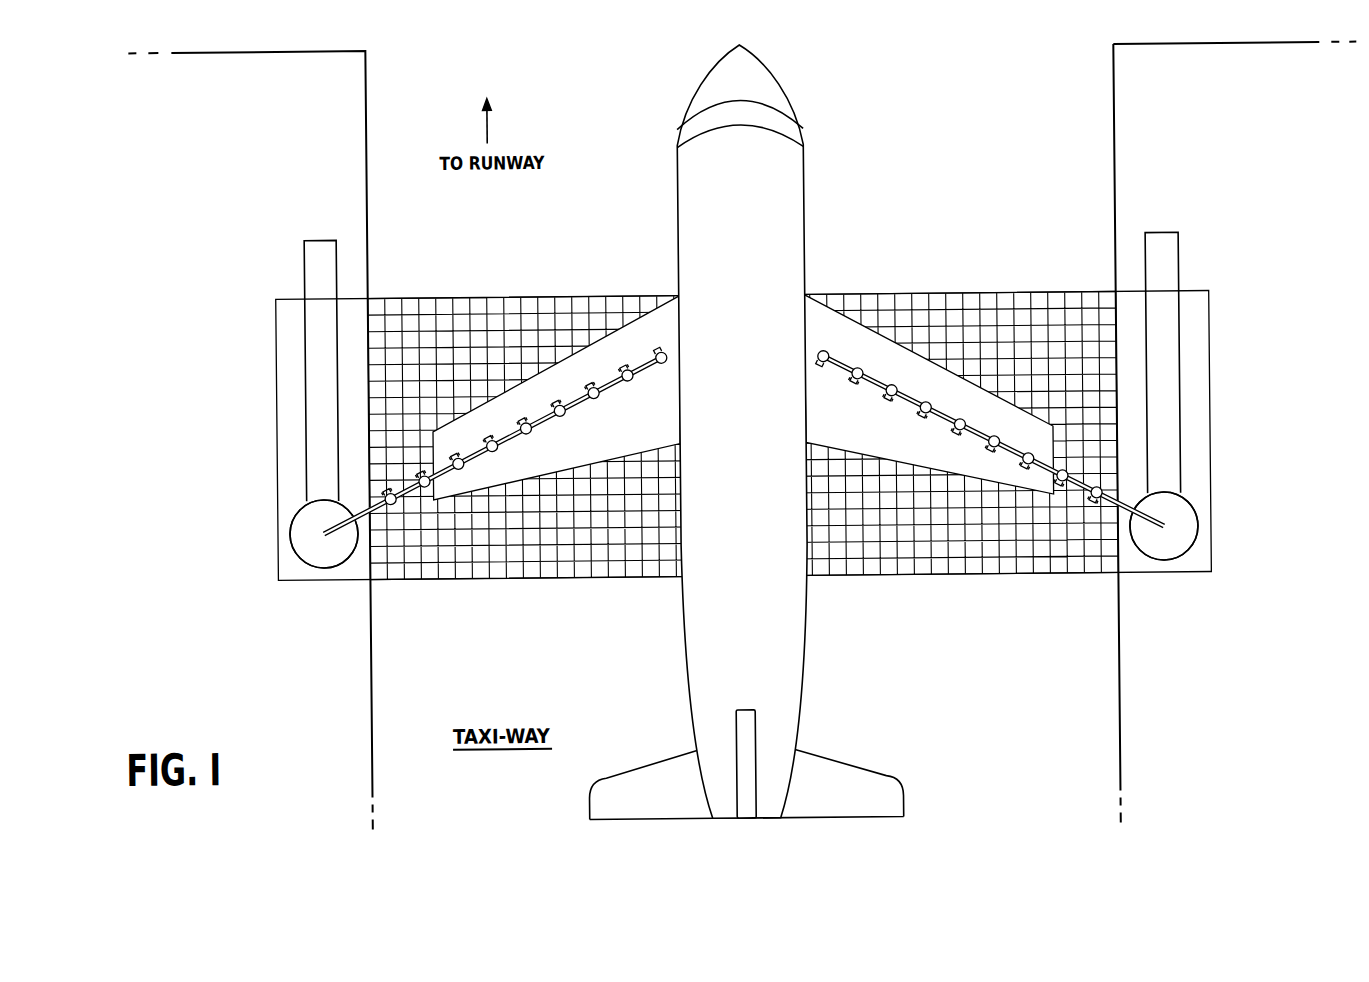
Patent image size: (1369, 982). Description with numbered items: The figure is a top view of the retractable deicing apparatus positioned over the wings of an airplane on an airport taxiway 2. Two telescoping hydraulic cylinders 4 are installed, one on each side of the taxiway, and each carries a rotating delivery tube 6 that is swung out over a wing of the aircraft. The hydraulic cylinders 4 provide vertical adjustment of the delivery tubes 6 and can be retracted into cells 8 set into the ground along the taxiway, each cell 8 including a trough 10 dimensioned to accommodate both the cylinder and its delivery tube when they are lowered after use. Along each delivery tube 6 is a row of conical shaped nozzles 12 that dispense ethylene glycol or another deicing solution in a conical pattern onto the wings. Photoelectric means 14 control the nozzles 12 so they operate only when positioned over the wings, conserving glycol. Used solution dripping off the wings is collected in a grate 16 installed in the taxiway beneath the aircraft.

The taxiway 2 is at (398, 113).
The telescoping hydraulic cylinder 4 is at (305, 542).
The rotating delivery tube 6 is at (604, 388).
The cell 8 is at (292, 510).
The trough 10 is at (320, 268).
The conical shaped nozzle 12 is at (560, 414).
The photoelectric means 14 is at (660, 350).
The grate 16 is at (534, 533).